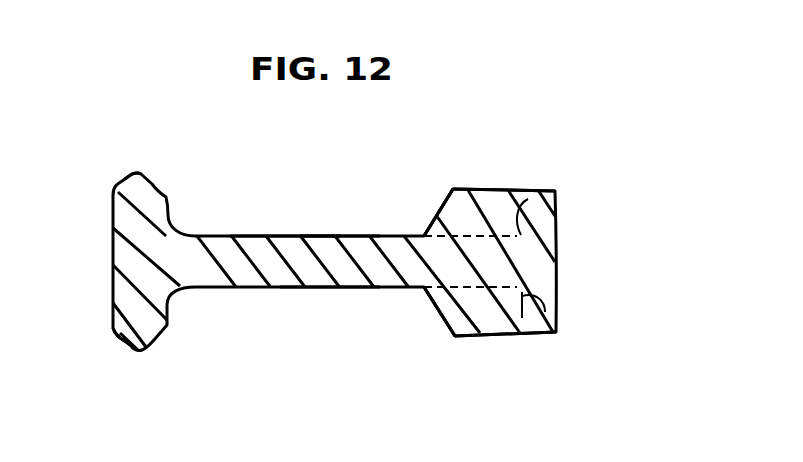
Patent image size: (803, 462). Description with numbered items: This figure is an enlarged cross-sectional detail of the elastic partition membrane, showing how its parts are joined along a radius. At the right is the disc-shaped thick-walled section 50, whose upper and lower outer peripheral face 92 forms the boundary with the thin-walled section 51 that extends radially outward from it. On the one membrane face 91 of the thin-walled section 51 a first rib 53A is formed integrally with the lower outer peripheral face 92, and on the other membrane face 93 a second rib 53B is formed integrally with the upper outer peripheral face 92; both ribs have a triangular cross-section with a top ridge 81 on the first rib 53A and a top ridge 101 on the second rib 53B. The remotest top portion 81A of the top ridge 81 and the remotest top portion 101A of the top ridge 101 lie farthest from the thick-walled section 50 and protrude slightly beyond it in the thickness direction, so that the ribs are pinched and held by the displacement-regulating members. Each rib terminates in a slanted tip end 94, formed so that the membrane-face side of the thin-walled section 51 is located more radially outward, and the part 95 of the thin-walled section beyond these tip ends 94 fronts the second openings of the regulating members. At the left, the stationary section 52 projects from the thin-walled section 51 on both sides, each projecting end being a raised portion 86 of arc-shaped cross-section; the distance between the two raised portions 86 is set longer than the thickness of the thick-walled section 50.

The thick-walled section 50 is at (547, 262).
The thin-walled section 51 is at (257, 285).
The stationary section 52 is at (122, 253).
The first rib 53A is at (496, 321).
The second rib 53B is at (483, 191).
The top ridge 81 is at (512, 329).
The remotest top portion 81A is at (453, 337).
The raised portion 86 is at (136, 172).
The one membrane face 91 is at (330, 288).
The outer peripheral face 92 is at (523, 185).
The other membrane face 93 is at (327, 236).
The tip end 94 is at (440, 207).
The part of the thin-walled section 95 is at (287, 236).
The top ridge 101 is at (500, 190).
The remotest top portion 101A is at (453, 188).